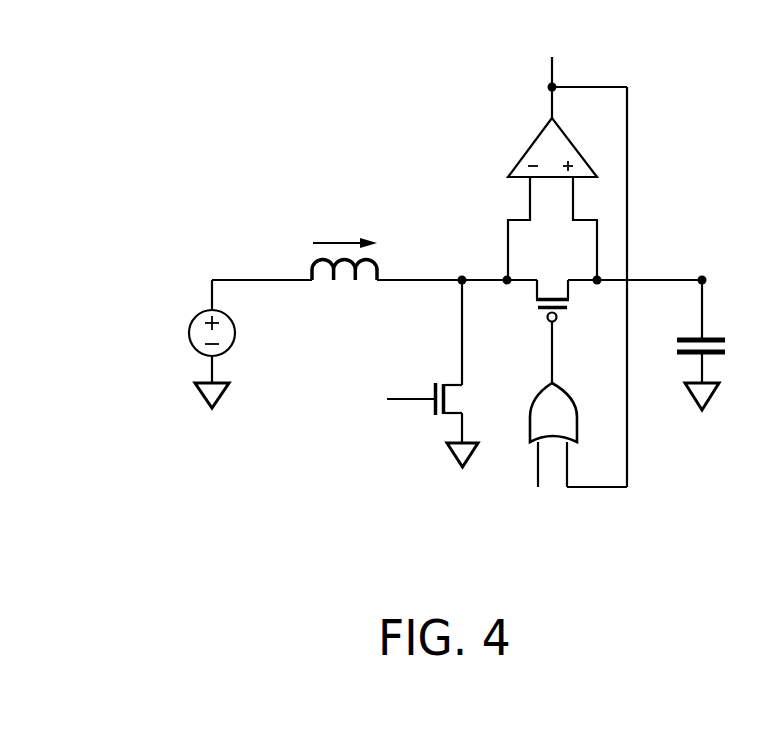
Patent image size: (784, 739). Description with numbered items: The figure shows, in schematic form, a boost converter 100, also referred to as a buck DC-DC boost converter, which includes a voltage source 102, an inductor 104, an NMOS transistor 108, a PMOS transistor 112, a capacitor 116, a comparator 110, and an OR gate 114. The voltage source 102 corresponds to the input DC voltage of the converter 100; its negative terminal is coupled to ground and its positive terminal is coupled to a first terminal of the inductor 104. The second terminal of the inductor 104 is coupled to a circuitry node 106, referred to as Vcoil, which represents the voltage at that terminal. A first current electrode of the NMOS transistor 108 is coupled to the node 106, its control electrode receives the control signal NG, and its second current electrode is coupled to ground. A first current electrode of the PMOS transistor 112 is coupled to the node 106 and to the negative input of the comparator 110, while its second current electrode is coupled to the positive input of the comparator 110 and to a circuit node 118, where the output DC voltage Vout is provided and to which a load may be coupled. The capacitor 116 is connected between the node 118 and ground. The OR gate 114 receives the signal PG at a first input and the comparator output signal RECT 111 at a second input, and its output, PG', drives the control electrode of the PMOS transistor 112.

The boost converter 100 is at (443, 303).
The voltage source 102 is at (190, 327).
The inductor 104 is at (315, 302).
The circuitry node 106 is at (462, 283).
The NMOS transistor 108 is at (448, 395).
The comparator 110 is at (532, 140).
The output signal RECT 111 is at (552, 58).
The PMOS transistor 112 is at (552, 295).
The OR gate 114 is at (573, 403).
The capacitor 116 is at (687, 332).
The circuit node 118 is at (705, 277).